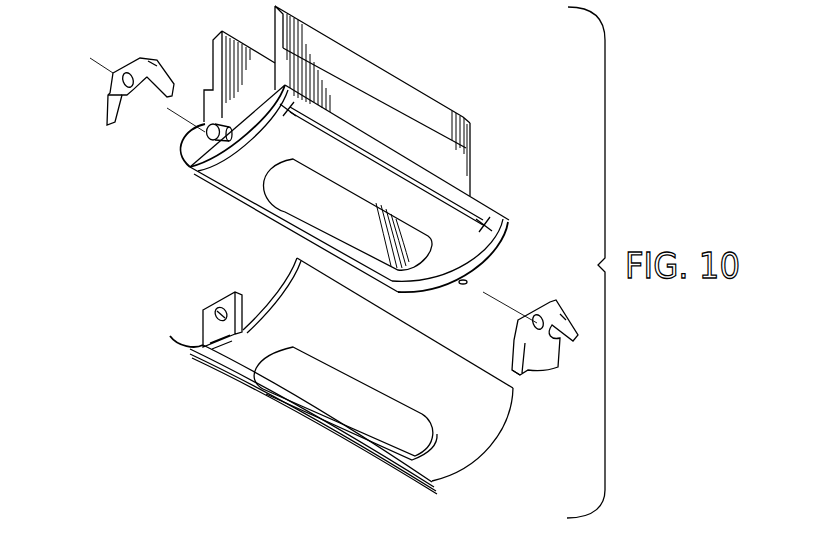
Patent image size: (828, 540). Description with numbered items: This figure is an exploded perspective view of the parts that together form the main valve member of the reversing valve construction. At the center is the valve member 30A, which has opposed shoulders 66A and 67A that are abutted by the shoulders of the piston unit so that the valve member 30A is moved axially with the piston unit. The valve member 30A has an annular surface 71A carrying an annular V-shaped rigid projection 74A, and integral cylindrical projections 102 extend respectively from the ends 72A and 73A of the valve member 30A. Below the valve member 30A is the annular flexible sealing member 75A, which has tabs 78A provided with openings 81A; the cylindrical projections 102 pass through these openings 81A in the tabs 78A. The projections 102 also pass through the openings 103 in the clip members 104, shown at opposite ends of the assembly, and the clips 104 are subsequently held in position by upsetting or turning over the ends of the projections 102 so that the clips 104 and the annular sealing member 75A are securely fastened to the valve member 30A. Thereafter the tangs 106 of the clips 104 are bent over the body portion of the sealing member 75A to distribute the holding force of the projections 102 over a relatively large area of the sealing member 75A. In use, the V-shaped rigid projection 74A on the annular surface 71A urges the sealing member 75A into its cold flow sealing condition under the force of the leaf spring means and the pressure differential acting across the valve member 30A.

The valve member 30A is at (418, 126).
The opposed shoulder 66A is at (214, 72).
The opposed shoulder 67A is at (477, 180).
The annular surface 71A is at (423, 180).
The end 72A is at (206, 133).
The end 73A is at (497, 257).
The annular V-shaped rigid projection 74A is at (337, 142).
The annular flexible sealing member 75A is at (485, 417).
The tab 78A is at (227, 298).
The opening 81A is at (215, 313).
The cylindrical projection 102 is at (212, 137).
The opening 103 is at (125, 80).
The clip member 104 is at (143, 62).
The tang 106 is at (162, 95).